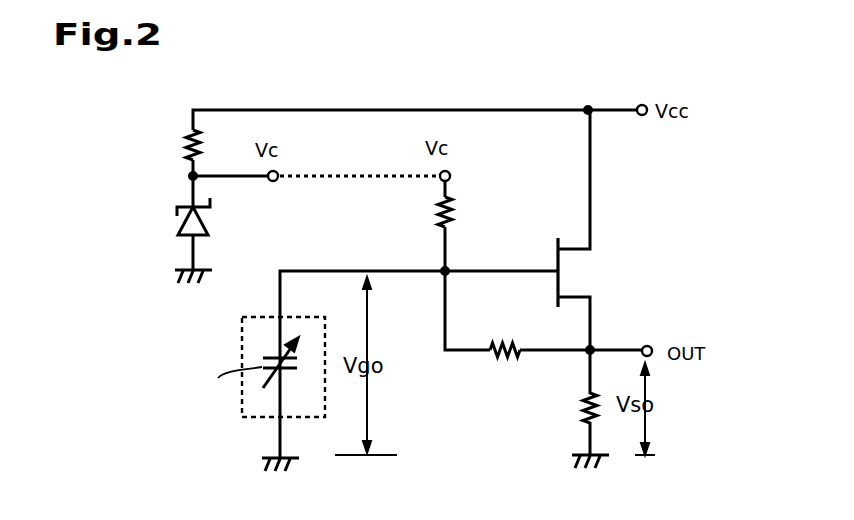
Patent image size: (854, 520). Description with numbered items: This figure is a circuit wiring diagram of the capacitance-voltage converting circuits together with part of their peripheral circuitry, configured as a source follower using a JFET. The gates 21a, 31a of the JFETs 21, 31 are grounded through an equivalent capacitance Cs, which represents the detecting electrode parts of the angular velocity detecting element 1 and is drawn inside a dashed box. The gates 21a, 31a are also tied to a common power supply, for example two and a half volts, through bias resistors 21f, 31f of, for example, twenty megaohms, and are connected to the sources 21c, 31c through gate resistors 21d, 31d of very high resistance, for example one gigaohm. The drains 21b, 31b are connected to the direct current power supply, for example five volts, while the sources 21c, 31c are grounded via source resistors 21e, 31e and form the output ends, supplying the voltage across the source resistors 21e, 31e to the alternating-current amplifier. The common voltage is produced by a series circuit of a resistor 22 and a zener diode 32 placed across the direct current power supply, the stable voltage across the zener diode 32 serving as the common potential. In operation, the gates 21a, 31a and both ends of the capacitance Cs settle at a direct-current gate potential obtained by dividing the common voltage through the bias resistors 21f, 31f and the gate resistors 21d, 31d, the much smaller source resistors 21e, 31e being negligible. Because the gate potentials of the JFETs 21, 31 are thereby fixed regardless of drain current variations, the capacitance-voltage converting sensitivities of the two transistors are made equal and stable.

The angular velocity detecting element 1 is at (240, 346).
The resistor 22 is at (180, 162).
The zener diode 32 is at (176, 233).
The JFET 21 is at (588, 270).
The JFET 31 is at (623, 230).
The gate 21a is at (515, 270).
The gate 31a is at (522, 266).
The drain 21b is at (665, 185).
The drain 31b is at (648, 179).
The source 21c is at (707, 313).
The source 31c is at (663, 322).
The gate resistor 21d is at (515, 367).
The gate resistor 31d is at (480, 388).
The source resistor 21e is at (573, 407).
The source resistor 31e is at (553, 427).
The bias resistor 21f is at (425, 212).
The bias resistor 31f is at (398, 223).